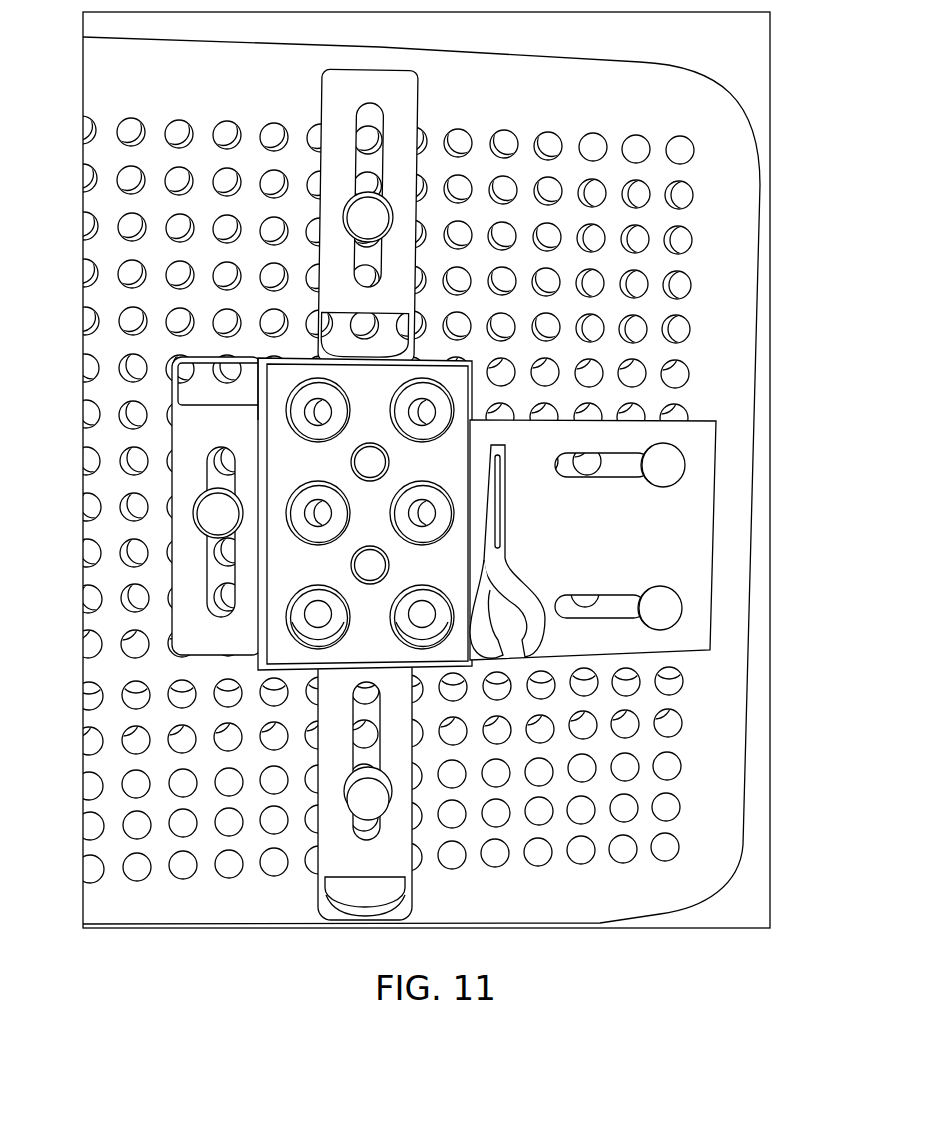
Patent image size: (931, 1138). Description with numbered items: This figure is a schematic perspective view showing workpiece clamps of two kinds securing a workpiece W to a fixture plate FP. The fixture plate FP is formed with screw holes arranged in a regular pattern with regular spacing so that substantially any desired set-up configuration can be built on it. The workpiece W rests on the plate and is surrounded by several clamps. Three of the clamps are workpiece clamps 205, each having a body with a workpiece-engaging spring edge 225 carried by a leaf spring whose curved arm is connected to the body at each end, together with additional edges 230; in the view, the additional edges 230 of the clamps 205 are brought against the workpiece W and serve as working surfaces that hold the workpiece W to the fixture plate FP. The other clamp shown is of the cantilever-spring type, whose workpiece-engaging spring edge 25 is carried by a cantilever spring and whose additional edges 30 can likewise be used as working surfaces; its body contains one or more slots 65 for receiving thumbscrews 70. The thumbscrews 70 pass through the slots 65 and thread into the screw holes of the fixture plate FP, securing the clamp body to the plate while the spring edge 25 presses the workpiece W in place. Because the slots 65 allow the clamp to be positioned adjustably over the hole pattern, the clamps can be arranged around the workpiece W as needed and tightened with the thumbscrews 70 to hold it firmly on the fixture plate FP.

The fixture plate FP is at (577, 116).
The workpiece W is at (277, 373).
The workpiece clamp 205 is at (311, 494).
The workpiece-engaging spring edge 225 is at (393, 351).
The additional edges 230 is at (279, 492).
The workpiece-engaging spring edge 25 is at (474, 496).
The additional edges 30 is at (639, 547).
The slots 65 is at (599, 474).
The thumbscrews 70 is at (676, 464).